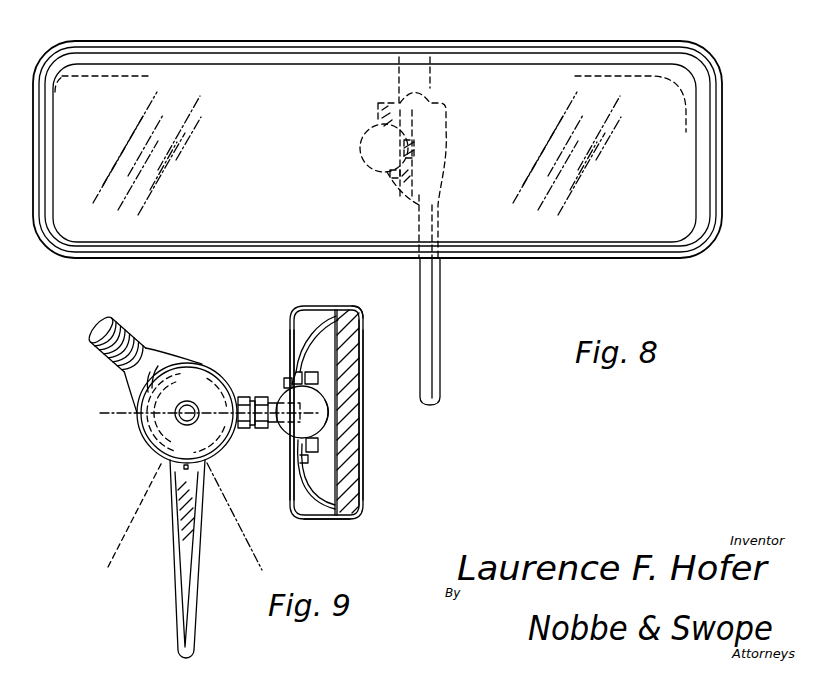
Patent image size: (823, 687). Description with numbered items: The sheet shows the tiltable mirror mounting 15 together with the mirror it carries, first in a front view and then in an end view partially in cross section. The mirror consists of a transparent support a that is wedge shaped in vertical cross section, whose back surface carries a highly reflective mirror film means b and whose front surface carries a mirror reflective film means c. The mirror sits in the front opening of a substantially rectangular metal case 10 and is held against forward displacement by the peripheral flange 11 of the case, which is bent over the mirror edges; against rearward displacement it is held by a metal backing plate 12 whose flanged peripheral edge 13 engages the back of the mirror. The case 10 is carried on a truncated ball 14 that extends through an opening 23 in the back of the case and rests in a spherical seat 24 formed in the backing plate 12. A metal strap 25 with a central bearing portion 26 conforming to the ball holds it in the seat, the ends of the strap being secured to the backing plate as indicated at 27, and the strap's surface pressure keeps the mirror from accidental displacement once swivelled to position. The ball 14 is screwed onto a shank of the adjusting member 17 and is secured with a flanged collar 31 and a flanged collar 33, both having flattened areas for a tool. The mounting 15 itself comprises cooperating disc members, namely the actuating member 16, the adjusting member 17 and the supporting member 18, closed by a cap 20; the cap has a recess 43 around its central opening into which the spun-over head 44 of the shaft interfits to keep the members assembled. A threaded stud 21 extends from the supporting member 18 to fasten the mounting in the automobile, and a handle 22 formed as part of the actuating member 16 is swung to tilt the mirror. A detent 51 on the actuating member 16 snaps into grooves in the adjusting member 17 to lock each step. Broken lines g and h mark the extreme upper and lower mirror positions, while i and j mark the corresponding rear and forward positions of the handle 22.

In FIG. 8, the case 10 is at (721, 176).
In FIG. 9, the case 10 is at (100, 413).
In FIG. 8, the peripheral flange 11 is at (701, 197).
In FIG. 9, the peripheral flange 11 is at (352, 320).
In FIG. 9, the backing plate 12 is at (300, 333).
In FIG. 9, the flanged peripheral edge 13 is at (340, 310).
In FIG. 8, the truncated ball 14 is at (371, 159).
In FIG. 9, the truncated ball 14 is at (287, 397).
In FIG. 8, the tiltable mirror mounting 15 is at (456, 103).
In FIG. 9, the tiltable mirror mounting 15 is at (185, 348).
In FIG. 8, the actuating member 16 is at (446, 150).
In FIG. 8, the adjusting member 17 is at (410, 190).
In FIG. 8, the supporting member 18 is at (399, 195).
In FIG. 8, the cap 20 is at (386, 187).
In FIG. 9, the cap 20 is at (198, 377).
In FIG. 8, the threaded stud 21 is at (440, 63).
In FIG. 9, the threaded stud 21 is at (122, 350).
In FIG. 8, the handle 22 is at (432, 316).
In FIG. 9, the handle 22 is at (186, 556).
In FIG. 9, the opening 23 is at (287, 380).
In FIG. 9, the spherical seat 24 is at (297, 370).
In FIG. 9, the metal strap 25 is at (313, 377).
In FIG. 9, the central bearing portion 26 is at (313, 446).
In FIG. 9, the strap securing points 27 is at (305, 468).
In FIG. 9, the flanged collar 31 is at (260, 431).
In FIG. 9, the flanged collar 33 is at (244, 395).
In FIG. 9, the recess 43 is at (175, 411).
In FIG. 9, the head 44 is at (177, 418).
In FIG. 9, the detent 51 is at (183, 469).
In FIG. 9, the transparent support a is at (350, 386).
In FIG. 9, the mirror film means b is at (348, 413).
In FIG. 8, the mirror reflective film means c is at (652, 147).
In FIG. 9, the mirror reflective film means c is at (360, 446).
In FIG. 9, the upper mirror position g is at (340, 302).
In FIG. 9, the lower mirror position h is at (325, 521).
In FIG. 9, the rear handle position i is at (126, 528).
In FIG. 9, the forward handle position j is at (238, 511).